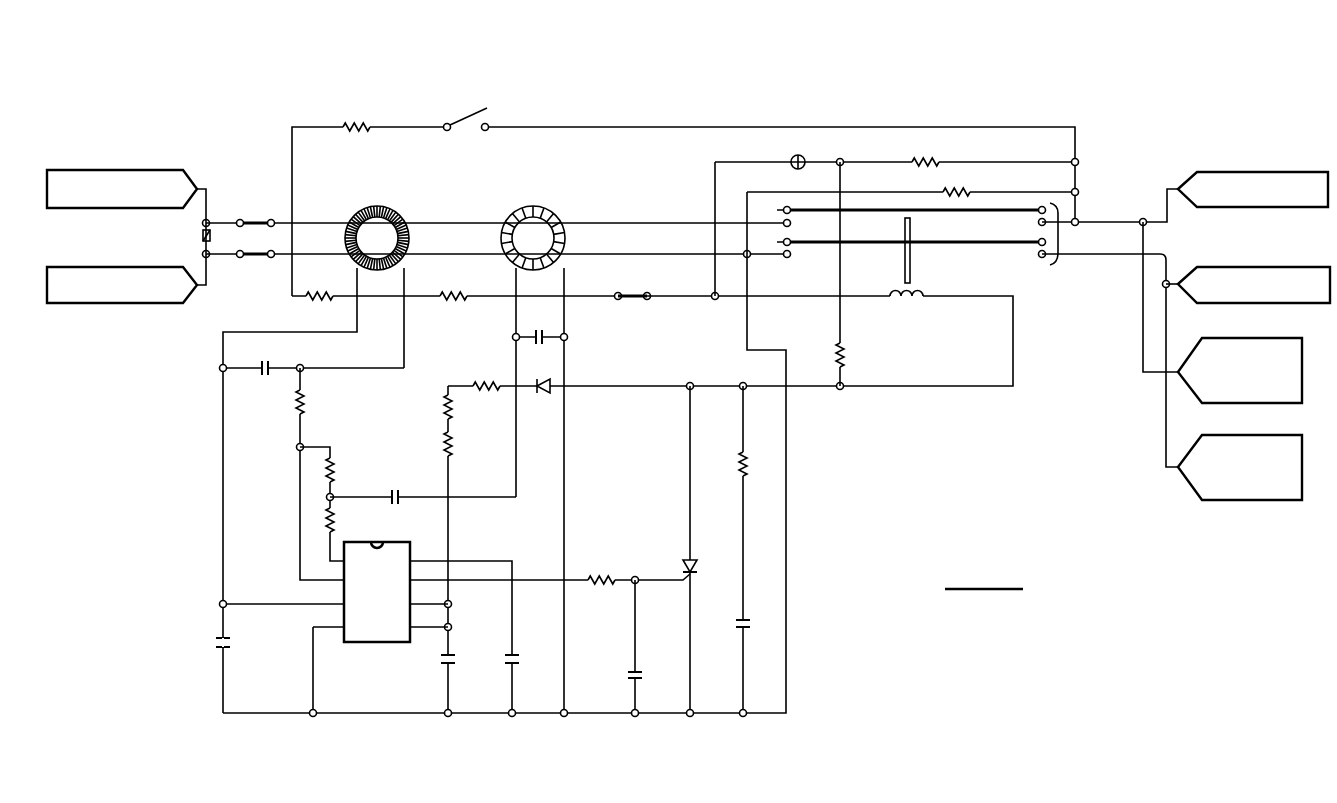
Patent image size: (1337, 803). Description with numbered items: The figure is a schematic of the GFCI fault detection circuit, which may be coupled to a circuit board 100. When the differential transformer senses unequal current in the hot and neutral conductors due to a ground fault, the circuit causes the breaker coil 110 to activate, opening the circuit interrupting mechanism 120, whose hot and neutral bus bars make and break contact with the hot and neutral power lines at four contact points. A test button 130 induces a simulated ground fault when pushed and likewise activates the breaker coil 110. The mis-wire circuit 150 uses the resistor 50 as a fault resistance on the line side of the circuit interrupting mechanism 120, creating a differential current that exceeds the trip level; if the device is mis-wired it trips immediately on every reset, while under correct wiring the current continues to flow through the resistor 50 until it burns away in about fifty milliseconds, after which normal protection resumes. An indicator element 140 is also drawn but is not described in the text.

The circuit board 100 is at (973, 84).
The breaker coil 110 is at (928, 292).
The circuit interrupting mechanism 120 is at (1058, 244).
The test button 130 is at (463, 118).
The neon indicator 140 is at (802, 155).
The mis-wire circuit 150 is at (485, 300).
The resistor 50 is at (285, 312).